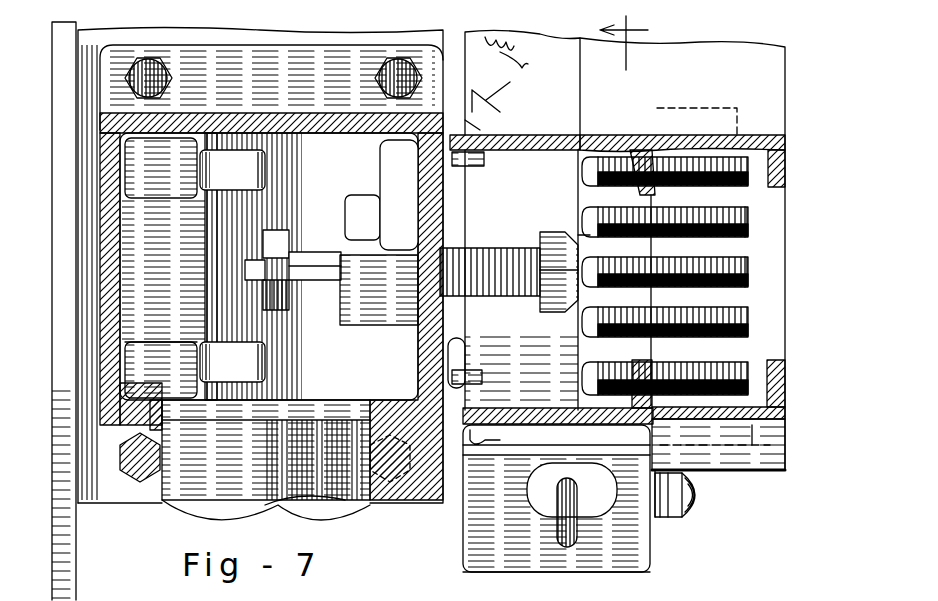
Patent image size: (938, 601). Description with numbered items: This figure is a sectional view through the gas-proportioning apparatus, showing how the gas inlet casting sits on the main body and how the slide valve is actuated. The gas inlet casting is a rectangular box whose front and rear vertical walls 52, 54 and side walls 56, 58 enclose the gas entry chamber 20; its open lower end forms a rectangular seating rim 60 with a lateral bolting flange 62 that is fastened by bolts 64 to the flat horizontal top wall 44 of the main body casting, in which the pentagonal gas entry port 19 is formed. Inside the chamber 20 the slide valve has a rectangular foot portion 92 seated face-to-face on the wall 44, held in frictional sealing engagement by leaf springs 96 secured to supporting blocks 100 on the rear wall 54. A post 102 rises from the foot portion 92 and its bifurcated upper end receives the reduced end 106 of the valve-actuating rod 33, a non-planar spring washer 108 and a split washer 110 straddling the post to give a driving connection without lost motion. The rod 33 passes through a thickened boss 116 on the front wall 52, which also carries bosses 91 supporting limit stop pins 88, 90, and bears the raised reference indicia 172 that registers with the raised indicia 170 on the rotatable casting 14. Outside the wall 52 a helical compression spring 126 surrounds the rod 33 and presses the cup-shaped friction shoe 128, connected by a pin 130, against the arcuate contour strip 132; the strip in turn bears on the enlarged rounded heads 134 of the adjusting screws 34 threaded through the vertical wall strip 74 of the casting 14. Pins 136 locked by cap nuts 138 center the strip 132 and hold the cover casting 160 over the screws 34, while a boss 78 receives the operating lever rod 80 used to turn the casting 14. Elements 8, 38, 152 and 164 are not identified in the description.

The section line 8 is at (632, 43).
The movable rotary shutter and valve actuating casting 14 is at (640, 107).
The gas entry port 19 is at (370, 240).
The gas entry chamber 20 is at (200, 289).
The valve-actuating rod 33 is at (330, 265).
The adjusting screws 34 is at (738, 268).
The frame wall 38 is at (60, 582).
The horizontal top wall 44 is at (136, 270).
The front vertical wall 52 is at (445, 205).
The rear vertical wall 54 is at (108, 180).
The side wall 56 is at (300, 118).
The side wall 58 is at (118, 420).
The rectangular seating rim 60 is at (178, 503).
The lateral bolting flange 62 is at (230, 66).
The bolts 64 is at (150, 72).
The vertical wall strip 74 is at (652, 205).
The boss 78 is at (540, 503).
The operating lever rod 80 is at (562, 532).
The limit stop pin 88 is at (452, 356).
The limit stop pin 90 is at (478, 160).
The bosses 91 is at (465, 135).
The foot portion 92 is at (216, 222).
The leaf springs 96 is at (250, 212).
The supporting blocks 100 is at (176, 190).
The post 102 is at (205, 318).
The reduced end 106 is at (250, 270).
The non-planar spring washer 108 is at (290, 312).
The split washer 110 is at (258, 262).
The thickened boss 116 is at (400, 190).
The helical compression spring 126 is at (478, 262).
The cup-shaped friction shoe 128 is at (560, 310).
The pin 130 is at (552, 268).
The arcuate contour strip 132 is at (578, 158).
The enlarged rounded heads 134 is at (588, 162).
The pins 136 is at (682, 512).
The cap nuts 138 is at (696, 492).
The plate 152 is at (446, 596).
The cover casting 160 is at (779, 488).
The pin 164 is at (662, 520).
The raised indicia 170 is at (512, 74).
The raised reference indicia 172 is at (358, 590).